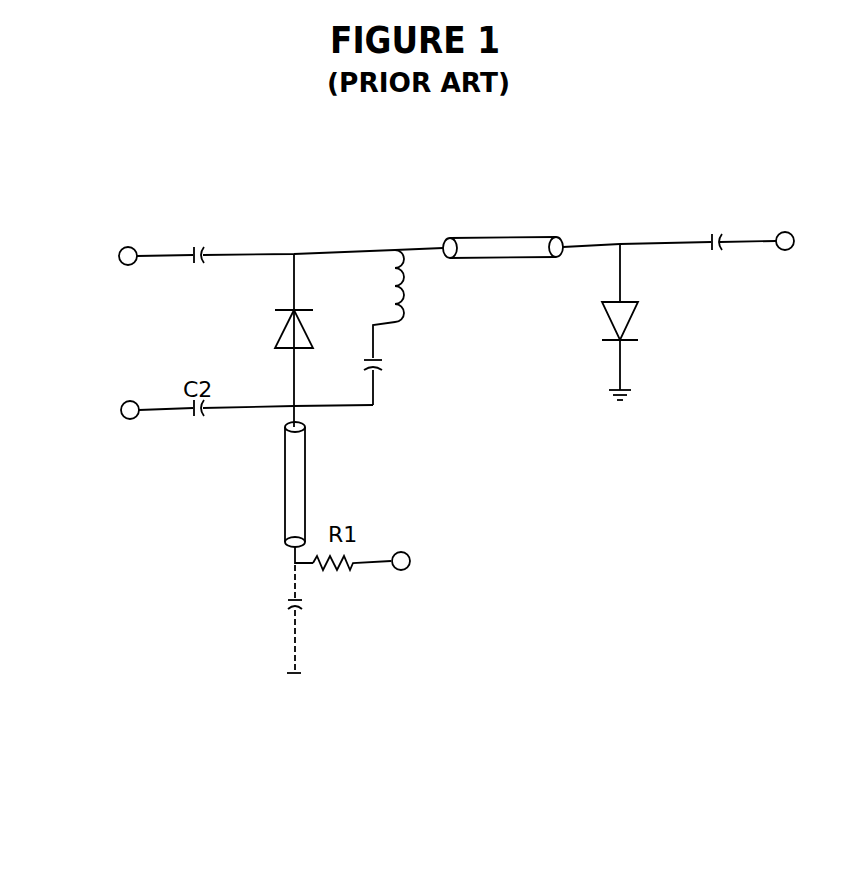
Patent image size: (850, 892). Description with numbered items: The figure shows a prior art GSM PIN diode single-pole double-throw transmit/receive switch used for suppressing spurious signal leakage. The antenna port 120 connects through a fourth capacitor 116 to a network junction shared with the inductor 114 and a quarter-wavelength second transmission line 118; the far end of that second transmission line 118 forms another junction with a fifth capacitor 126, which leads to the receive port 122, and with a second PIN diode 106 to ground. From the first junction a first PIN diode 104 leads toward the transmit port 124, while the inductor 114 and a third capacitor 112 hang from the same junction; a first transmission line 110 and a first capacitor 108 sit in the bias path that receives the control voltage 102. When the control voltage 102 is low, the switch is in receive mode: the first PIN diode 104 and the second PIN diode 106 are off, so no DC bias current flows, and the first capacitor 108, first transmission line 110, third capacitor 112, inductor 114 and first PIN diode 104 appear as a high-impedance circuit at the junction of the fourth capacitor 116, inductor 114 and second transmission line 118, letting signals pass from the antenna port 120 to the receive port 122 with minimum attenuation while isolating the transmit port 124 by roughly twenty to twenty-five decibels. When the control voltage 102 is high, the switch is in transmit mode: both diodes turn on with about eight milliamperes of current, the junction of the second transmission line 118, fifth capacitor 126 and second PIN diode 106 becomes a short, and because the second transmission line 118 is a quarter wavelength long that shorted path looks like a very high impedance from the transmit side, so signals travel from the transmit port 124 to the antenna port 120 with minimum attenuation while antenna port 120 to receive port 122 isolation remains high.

The Vcontrol 102 is at (400, 571).
The PIN diode D1 104 is at (278, 338).
The PIN diode D2 106 is at (620, 348).
The capacitor C1 108 is at (292, 614).
The transmission line TRL-1 110 is at (285, 478).
The capacitor C3 112 is at (373, 383).
The inductor L1 114 is at (405, 300).
The capacitor C4 116 is at (178, 254).
The transmission line TRL-2 118 is at (545, 238).
The ANT port 120 is at (128, 266).
The RX port 122 is at (787, 250).
The TX port 124 is at (130, 420).
The capacitor C5 126 is at (735, 242).